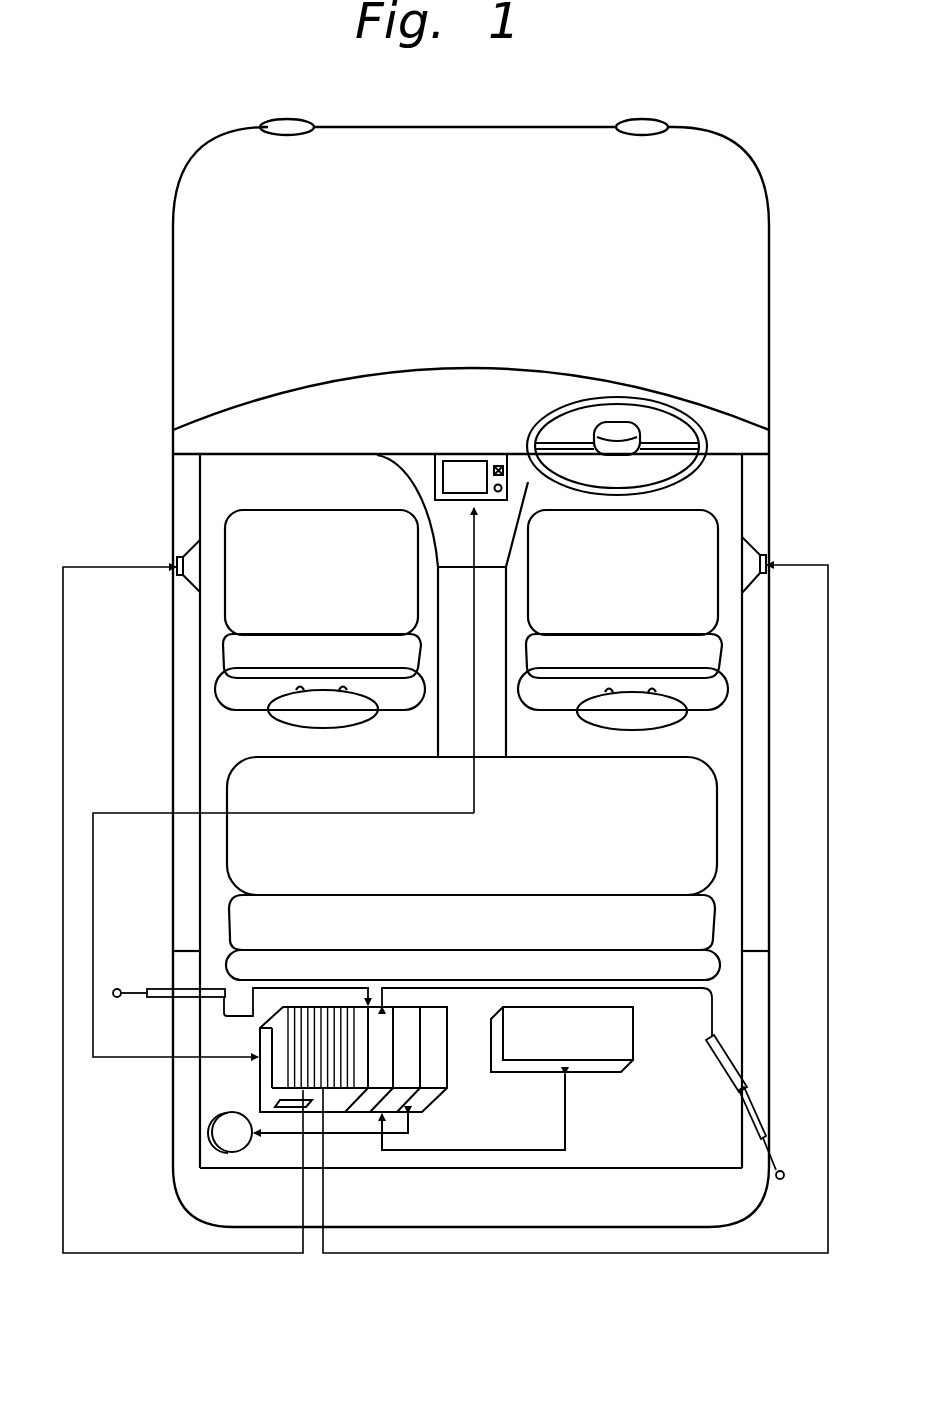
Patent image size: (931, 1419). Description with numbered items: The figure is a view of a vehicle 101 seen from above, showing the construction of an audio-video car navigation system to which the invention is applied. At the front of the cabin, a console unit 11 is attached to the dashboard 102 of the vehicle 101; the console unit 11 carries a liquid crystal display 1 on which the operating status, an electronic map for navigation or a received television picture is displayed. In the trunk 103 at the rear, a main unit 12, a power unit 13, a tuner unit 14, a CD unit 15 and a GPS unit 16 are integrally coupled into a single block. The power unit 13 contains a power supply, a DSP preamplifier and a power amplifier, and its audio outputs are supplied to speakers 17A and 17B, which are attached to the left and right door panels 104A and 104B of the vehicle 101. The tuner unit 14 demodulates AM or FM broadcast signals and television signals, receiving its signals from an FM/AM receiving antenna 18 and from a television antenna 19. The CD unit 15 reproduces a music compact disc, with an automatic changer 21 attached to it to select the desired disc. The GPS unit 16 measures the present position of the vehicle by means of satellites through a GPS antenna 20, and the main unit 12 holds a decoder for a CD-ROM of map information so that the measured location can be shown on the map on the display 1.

The liquid crystal display 1 is at (300, 725).
The console unit 11 is at (478, 454).
The main unit 12 is at (342, 1088).
The power unit 13 is at (262, 1032).
The tuner unit 14 is at (360, 1104).
The CD unit 15 is at (402, 1096).
The GPS unit 16 is at (428, 1098).
The speaker 17A is at (188, 587).
The speaker 17B is at (753, 583).
The FM/AM receiving antenna 18 is at (777, 1167).
The television antenna 19 is at (133, 987).
The GPS antenna 20 is at (208, 1131).
The automatic changer 21 is at (628, 1037).
The vehicle 101 is at (597, 113).
The dashboard 102 is at (420, 388).
The trunk 103 is at (652, 1168).
The door panel 104A is at (182, 482).
The door panel 104B is at (755, 498).